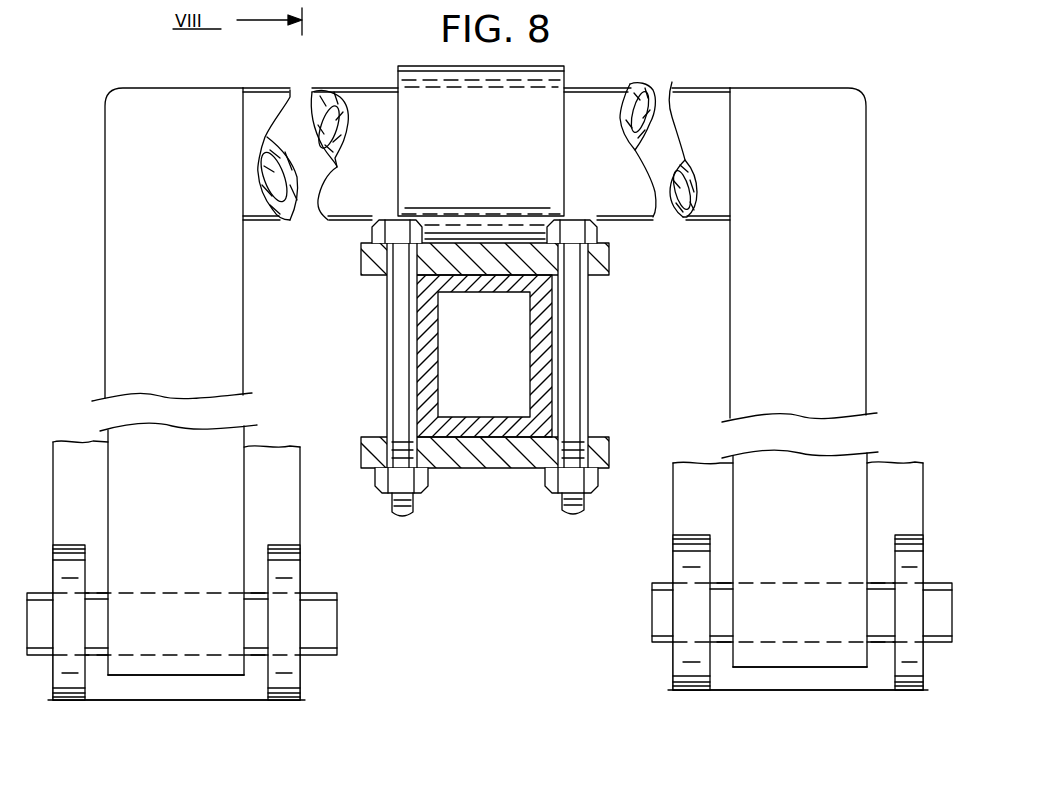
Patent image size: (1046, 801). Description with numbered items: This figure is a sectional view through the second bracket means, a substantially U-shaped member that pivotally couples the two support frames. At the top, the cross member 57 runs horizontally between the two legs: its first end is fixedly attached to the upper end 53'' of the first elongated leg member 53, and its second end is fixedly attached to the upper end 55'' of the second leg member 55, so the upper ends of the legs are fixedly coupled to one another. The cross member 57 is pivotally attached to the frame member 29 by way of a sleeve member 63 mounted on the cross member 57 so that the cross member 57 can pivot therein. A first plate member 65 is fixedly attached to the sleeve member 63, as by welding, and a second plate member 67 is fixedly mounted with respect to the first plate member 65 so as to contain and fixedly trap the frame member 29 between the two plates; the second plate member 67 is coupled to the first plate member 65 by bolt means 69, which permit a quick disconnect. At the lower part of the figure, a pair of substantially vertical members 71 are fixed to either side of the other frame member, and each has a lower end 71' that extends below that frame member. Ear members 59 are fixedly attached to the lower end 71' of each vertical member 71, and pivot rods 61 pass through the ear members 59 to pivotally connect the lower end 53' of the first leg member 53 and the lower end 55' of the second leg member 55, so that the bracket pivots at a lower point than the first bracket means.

The frame member 29 is at (522, 427).
The first elongated leg member 53 is at (823, 465).
The lower end of first leg member 53' is at (800, 706).
The upper end of first leg member 53'' is at (819, 255).
The second leg member 55 is at (207, 534).
The lower end of second leg member 55' is at (184, 711).
The upper end of second leg member 55'' is at (133, 244).
The cross member 57 is at (285, 88).
The ear members 59 is at (286, 577).
The pivot rods 61 is at (320, 628).
The sleeve members 63 is at (538, 103).
The first plate member 65 is at (597, 257).
The second plate member 67 is at (467, 462).
The bolt means 69 is at (587, 498).
The vertical members 71 is at (488, 570).
The lower end of vertical member 71' is at (488, 726).